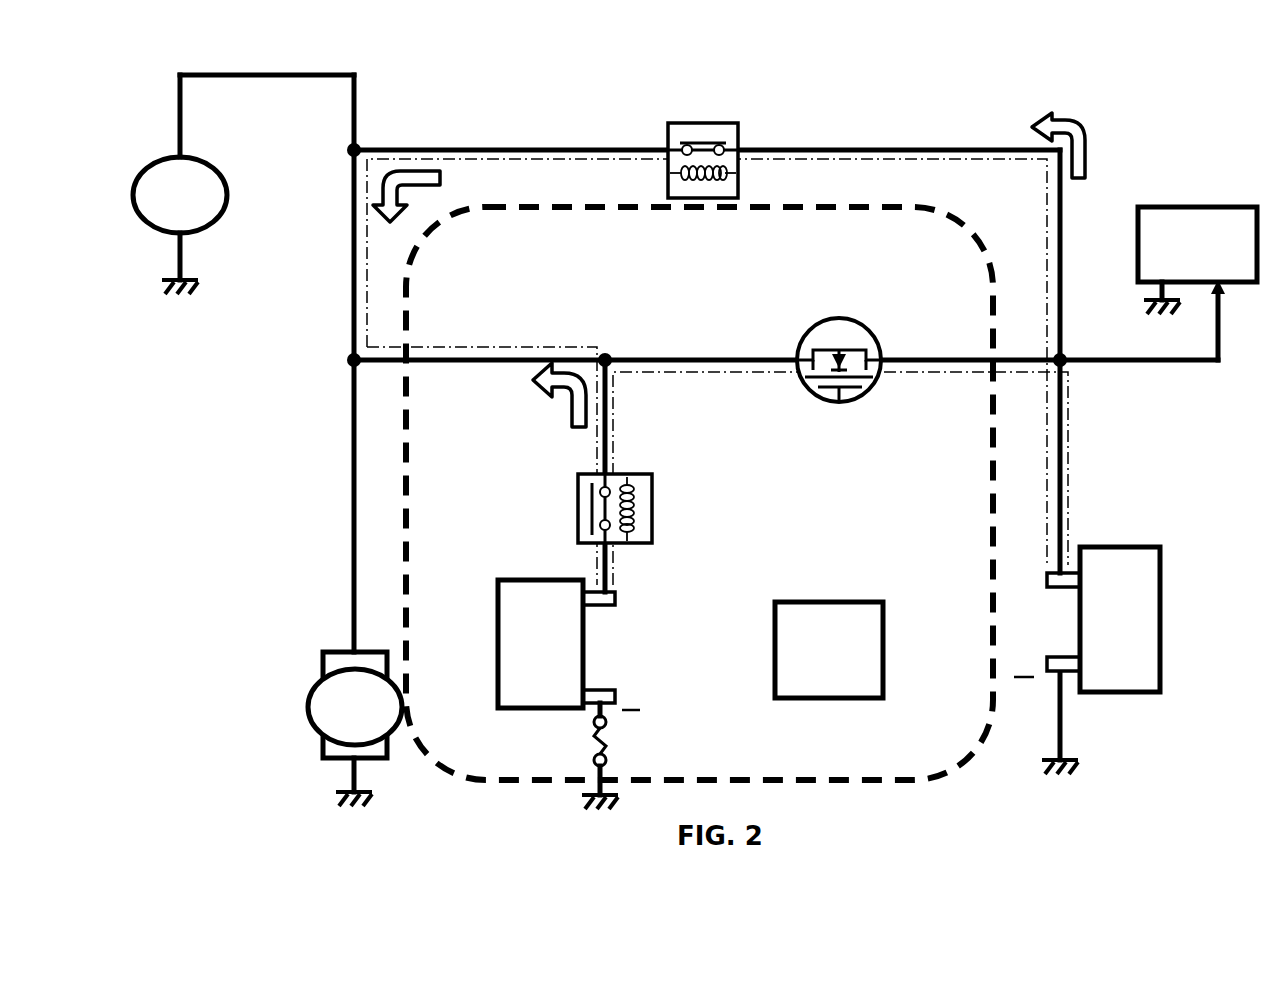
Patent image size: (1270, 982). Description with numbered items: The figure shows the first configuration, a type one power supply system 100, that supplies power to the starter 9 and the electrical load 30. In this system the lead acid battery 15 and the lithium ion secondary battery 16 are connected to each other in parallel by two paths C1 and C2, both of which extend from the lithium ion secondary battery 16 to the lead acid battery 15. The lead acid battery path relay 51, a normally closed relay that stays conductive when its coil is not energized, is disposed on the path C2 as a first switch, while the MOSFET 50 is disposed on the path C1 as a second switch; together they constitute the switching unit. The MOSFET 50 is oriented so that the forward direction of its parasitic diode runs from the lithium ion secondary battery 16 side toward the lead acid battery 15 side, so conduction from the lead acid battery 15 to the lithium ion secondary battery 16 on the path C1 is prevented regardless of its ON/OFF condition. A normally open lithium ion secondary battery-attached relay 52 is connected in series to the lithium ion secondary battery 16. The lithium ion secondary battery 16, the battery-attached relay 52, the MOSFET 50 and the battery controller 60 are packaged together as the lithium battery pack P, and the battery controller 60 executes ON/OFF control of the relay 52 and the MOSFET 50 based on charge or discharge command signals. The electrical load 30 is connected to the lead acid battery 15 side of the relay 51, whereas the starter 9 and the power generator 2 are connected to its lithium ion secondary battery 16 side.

The power supply system 100 is at (1247, 50).
The power generator 2 is at (208, 228).
The starter 9 is at (316, 680).
The lithium ion secondary battery 16 is at (522, 578).
The lead acid battery path relay 51 is at (738, 133).
The lithium ion secondary battery-attached relay 52 is at (652, 490).
The MOSFET 50 is at (860, 403).
The battery controller 60 is at (797, 602).
The electrical load 30 is at (1176, 207).
The lead acid battery 15 is at (1143, 547).
The path C1 is at (738, 372).
The path C2 is at (477, 150).
The lithium battery pack P is at (937, 779).